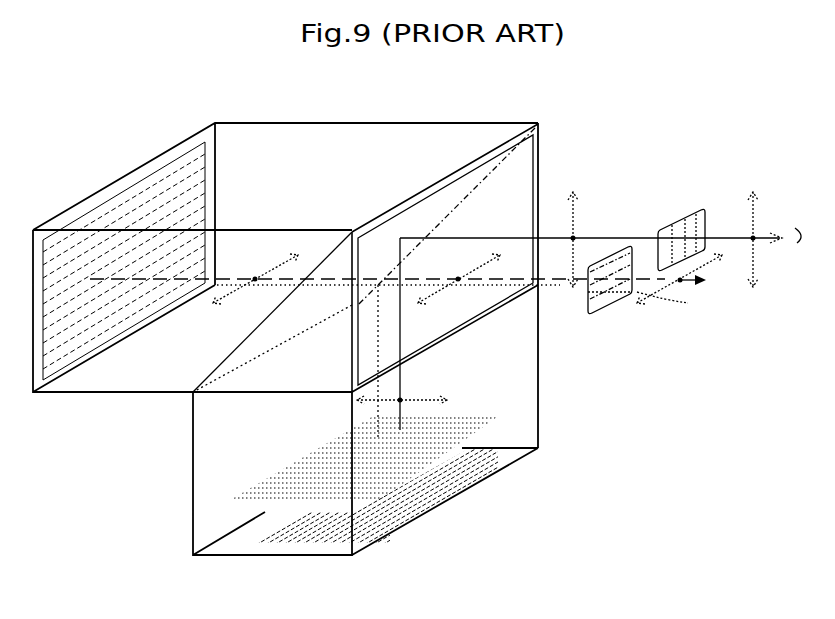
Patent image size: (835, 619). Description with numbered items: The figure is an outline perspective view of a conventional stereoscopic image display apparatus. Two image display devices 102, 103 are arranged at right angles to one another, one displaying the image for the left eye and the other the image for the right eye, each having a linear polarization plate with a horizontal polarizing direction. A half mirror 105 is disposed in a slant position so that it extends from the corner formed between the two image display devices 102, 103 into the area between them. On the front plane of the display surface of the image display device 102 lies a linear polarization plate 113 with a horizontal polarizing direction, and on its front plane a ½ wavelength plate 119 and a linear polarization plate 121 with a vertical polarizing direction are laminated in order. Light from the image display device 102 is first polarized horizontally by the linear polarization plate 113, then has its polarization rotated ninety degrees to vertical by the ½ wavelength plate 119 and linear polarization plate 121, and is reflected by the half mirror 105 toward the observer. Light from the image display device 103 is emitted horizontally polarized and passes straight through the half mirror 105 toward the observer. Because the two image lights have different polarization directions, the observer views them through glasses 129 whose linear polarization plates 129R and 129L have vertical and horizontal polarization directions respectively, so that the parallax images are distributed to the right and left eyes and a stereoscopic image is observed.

The image display device 102 is at (417, 513).
The image display device 103 is at (155, 317).
The half mirror 105 is at (307, 330).
The linear polarization plate 113 is at (455, 480).
The ½ wavelength plate 119 is at (472, 423).
The linear polarization plate 121 is at (427, 334).
The glasses 129 is at (712, 195).
The linear polarization plate 129L is at (600, 303).
The linear polarization plate 129R is at (675, 222).